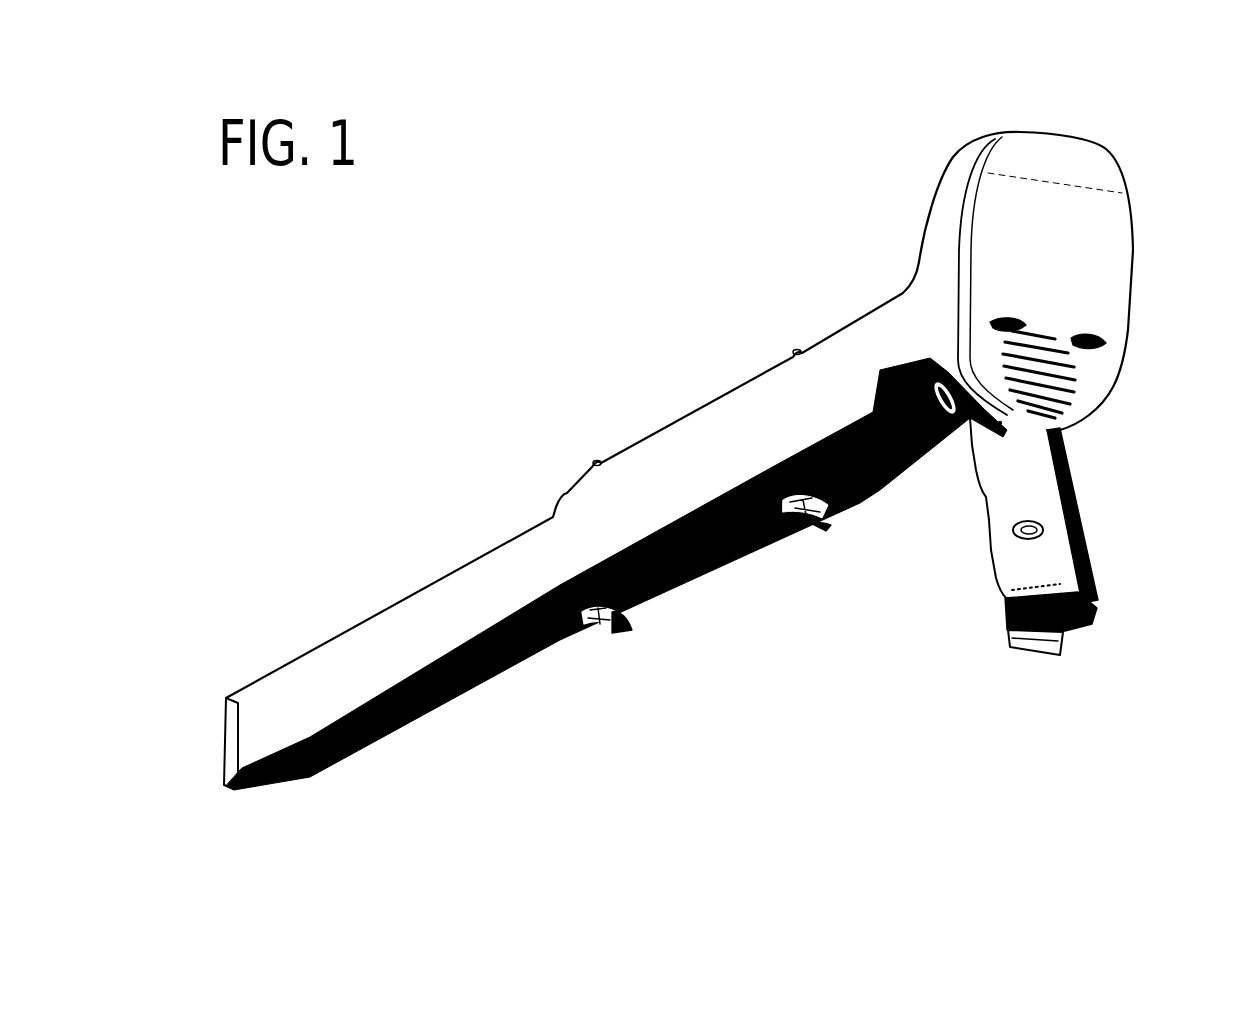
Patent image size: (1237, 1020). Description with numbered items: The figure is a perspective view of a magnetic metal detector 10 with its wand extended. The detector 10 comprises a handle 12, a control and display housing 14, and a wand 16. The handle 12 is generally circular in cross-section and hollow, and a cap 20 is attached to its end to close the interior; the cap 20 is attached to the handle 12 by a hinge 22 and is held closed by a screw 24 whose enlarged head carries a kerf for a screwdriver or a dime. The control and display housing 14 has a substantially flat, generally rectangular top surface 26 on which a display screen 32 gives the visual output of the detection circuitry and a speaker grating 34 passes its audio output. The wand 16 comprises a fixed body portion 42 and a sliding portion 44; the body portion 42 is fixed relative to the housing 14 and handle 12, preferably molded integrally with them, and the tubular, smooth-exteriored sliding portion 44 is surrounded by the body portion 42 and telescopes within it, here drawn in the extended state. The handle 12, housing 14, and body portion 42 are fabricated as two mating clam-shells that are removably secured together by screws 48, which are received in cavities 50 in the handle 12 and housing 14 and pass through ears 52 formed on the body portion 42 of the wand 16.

The magnetic metal detector 10 is at (685, 193).
The handle 12 is at (962, 655).
The control and display housing 14 is at (922, 139).
The wand 16 is at (456, 403).
The cap 20 is at (1080, 637).
The hinge 22 is at (1043, 653).
The screw 24 is at (1093, 592).
The top surface 26 is at (1073, 162).
The display screen 32 is at (1067, 252).
The speaker grating 34 is at (1050, 378).
The body portion 42 is at (705, 440).
The sliding portion 44 is at (380, 635).
The screws 48 is at (797, 530).
The cavities 50 is at (1017, 533).
The ears 52 is at (823, 523).